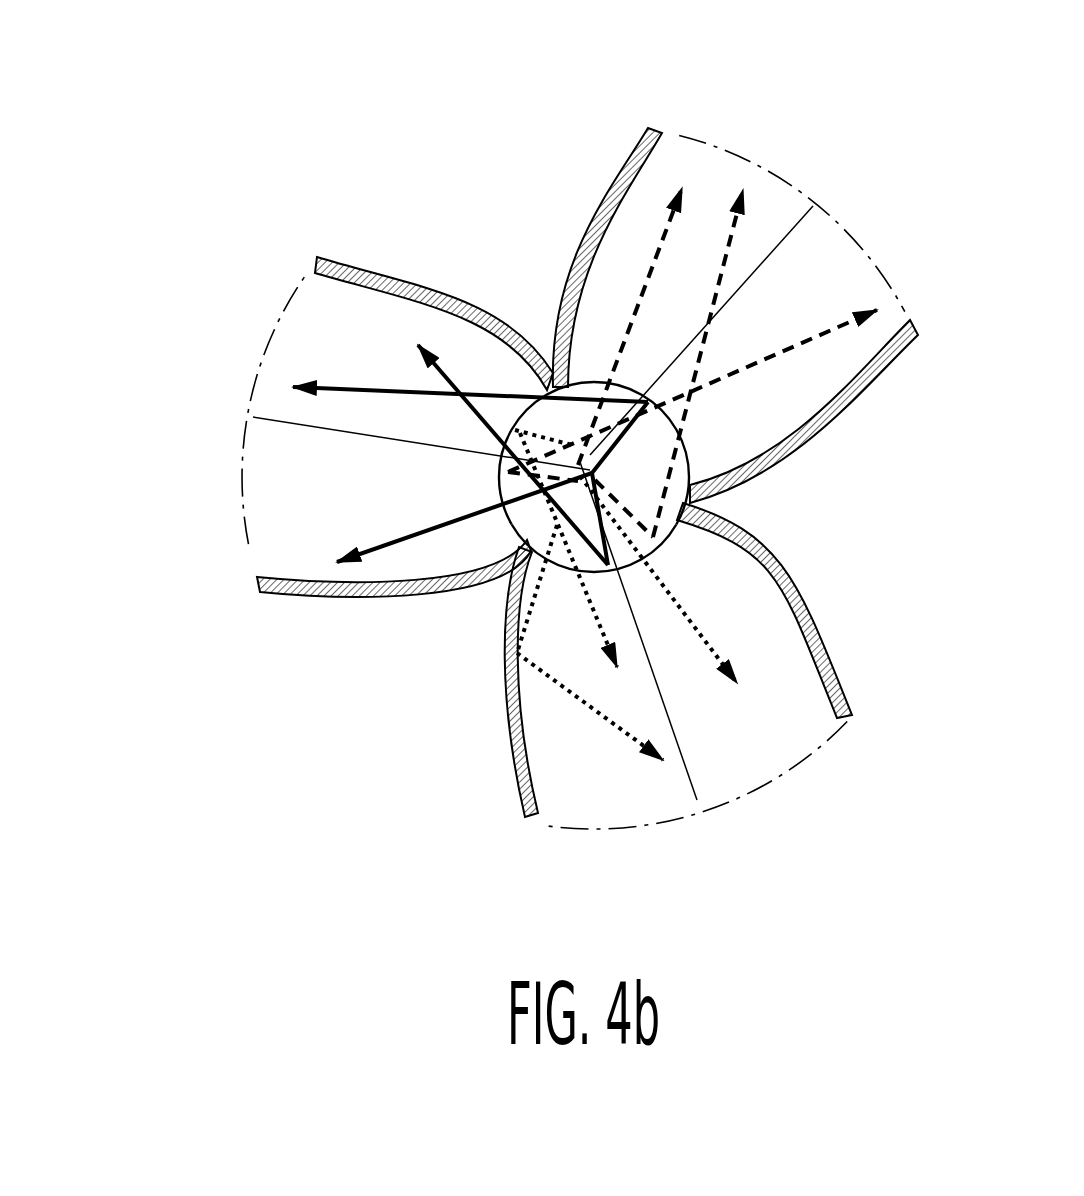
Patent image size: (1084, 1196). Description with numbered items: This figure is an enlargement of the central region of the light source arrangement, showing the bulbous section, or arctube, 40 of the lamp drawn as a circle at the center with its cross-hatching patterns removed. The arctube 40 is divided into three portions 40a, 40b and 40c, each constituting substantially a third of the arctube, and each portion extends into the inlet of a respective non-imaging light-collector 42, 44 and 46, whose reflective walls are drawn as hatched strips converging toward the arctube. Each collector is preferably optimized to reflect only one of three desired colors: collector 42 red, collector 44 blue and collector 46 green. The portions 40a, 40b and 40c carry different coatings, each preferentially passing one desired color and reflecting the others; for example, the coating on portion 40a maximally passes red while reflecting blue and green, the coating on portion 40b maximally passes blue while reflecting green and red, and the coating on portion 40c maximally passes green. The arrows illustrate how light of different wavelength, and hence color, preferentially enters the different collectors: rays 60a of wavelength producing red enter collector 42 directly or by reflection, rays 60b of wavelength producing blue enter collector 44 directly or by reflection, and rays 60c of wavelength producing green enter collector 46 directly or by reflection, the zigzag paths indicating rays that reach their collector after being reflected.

The arctube 40 is at (700, 438).
The portion of arctube 40a is at (642, 465).
The portion of arctube 40b is at (533, 513).
The portion of arctube 40c is at (663, 520).
The non-imaging light-collector 42 is at (647, 142).
The non-imaging light-collector 44 is at (368, 270).
The non-imaging light-collector 46 is at (517, 772).
The rays 60a is at (847, 320).
The rays 60b is at (440, 372).
The rays 60c is at (710, 650).